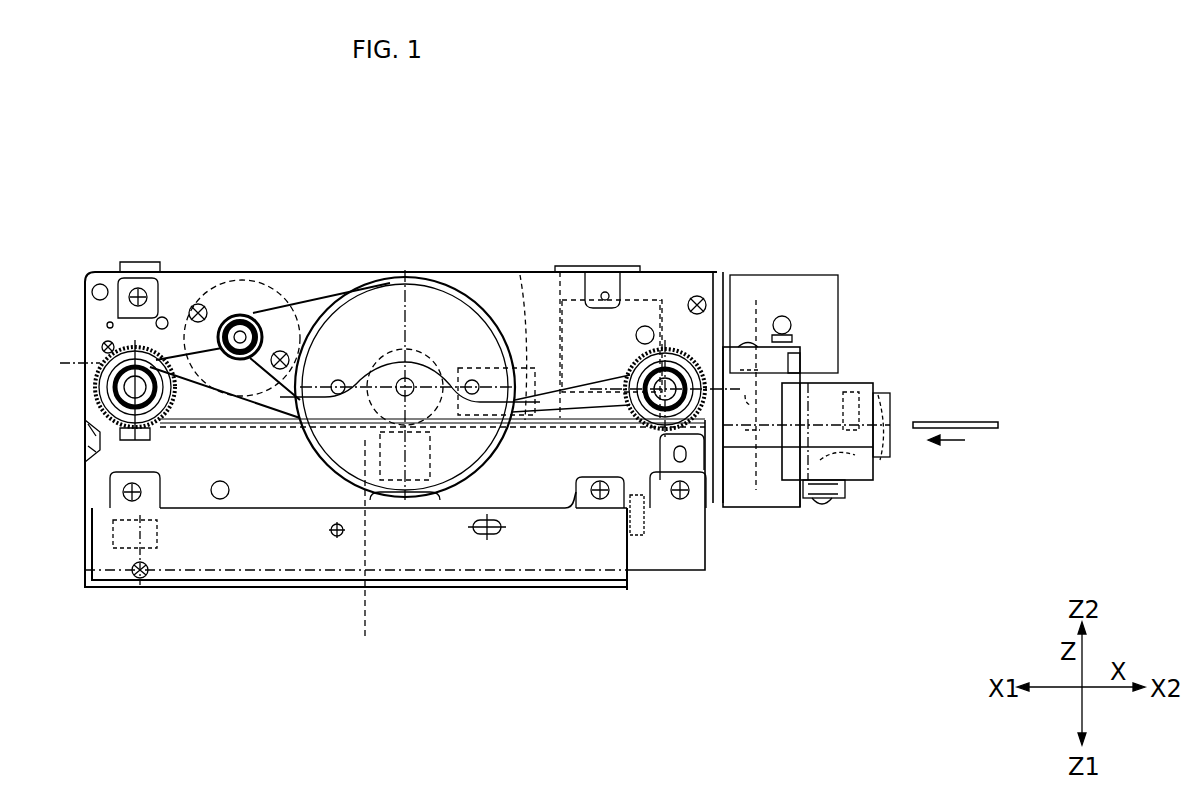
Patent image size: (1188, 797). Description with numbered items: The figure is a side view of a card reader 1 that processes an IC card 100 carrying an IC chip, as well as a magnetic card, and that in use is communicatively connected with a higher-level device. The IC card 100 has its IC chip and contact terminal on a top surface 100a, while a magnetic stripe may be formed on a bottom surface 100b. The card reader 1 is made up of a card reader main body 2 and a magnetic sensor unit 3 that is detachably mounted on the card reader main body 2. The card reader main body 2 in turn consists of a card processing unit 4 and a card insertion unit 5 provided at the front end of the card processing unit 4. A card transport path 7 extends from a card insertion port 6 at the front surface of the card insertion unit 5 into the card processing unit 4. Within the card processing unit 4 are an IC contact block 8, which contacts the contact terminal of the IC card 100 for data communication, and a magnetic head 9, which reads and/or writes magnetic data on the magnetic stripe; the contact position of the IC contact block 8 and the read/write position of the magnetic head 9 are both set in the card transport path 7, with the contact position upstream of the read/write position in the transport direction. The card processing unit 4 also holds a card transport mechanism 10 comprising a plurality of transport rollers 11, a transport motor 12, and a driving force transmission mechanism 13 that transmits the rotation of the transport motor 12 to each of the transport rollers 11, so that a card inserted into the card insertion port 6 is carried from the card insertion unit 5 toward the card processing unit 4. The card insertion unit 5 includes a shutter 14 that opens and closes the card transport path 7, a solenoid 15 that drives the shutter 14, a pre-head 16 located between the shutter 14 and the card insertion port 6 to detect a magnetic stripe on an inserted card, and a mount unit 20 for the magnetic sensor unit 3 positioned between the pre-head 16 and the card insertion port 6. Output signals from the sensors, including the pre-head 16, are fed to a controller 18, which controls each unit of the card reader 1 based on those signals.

The card reader 1 is at (98, 192).
The card reader main body 2 is at (812, 690).
The magnetic sensor unit 3 is at (808, 426).
The card processing unit 4 is at (421, 605).
The card insertion unit 5 is at (831, 442).
The card insertion port 6 is at (914, 392).
The card transport path 7 is at (775, 392).
The IC contact block 8 is at (526, 345).
The magnetic head 9 is at (366, 490).
The card transport mechanism 10 is at (300, 292).
The transport rollers 11 is at (140, 365).
The transport motor 12 is at (212, 282).
The driving force transmission mechanism 13 is at (323, 292).
The shutter 14 is at (752, 392).
The solenoid 15 is at (808, 292).
The pre-head 16 is at (849, 482).
The controller 18 is at (570, 268).
The mount unit 20 is at (882, 400).
The IC card 100 is at (950, 418).
The top surface 100a is at (975, 420).
The bottom surface 100b is at (975, 430).